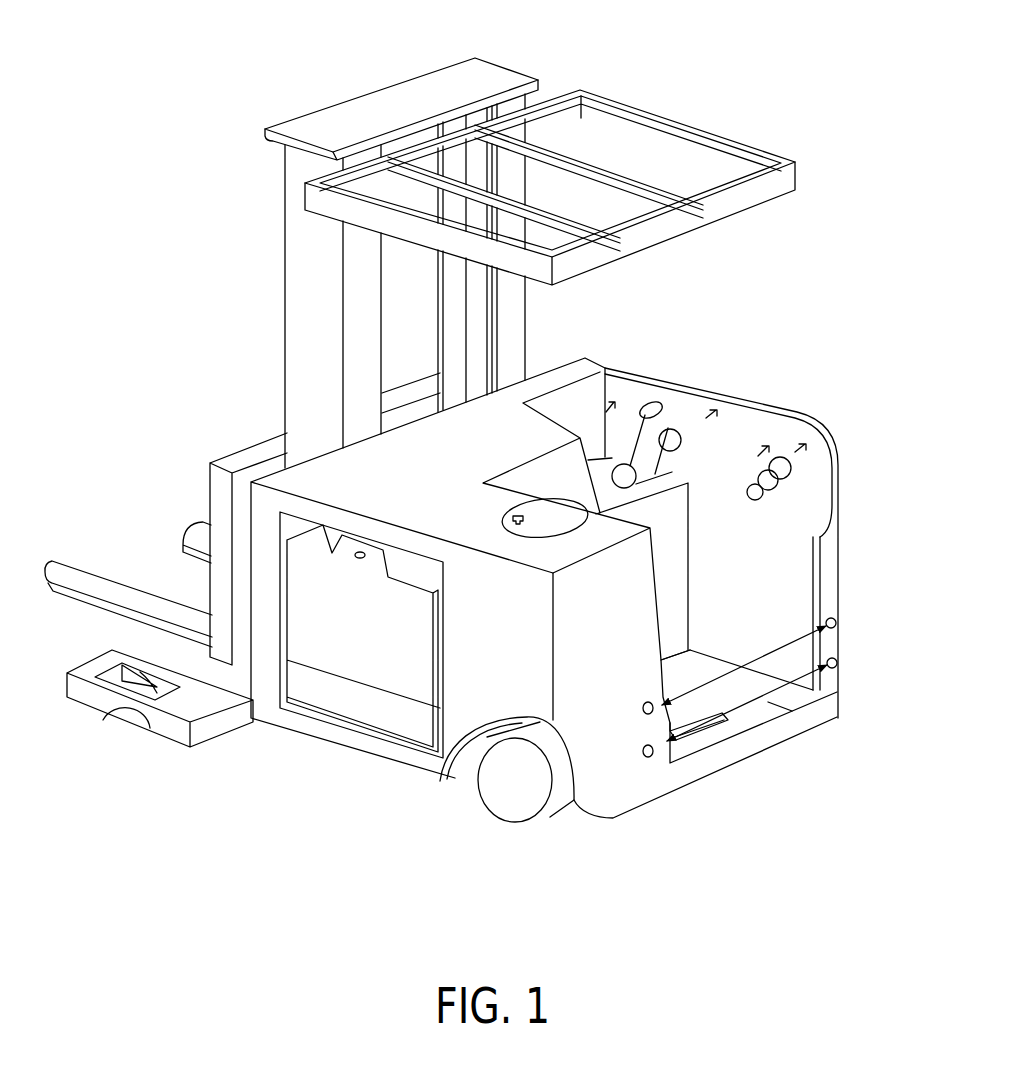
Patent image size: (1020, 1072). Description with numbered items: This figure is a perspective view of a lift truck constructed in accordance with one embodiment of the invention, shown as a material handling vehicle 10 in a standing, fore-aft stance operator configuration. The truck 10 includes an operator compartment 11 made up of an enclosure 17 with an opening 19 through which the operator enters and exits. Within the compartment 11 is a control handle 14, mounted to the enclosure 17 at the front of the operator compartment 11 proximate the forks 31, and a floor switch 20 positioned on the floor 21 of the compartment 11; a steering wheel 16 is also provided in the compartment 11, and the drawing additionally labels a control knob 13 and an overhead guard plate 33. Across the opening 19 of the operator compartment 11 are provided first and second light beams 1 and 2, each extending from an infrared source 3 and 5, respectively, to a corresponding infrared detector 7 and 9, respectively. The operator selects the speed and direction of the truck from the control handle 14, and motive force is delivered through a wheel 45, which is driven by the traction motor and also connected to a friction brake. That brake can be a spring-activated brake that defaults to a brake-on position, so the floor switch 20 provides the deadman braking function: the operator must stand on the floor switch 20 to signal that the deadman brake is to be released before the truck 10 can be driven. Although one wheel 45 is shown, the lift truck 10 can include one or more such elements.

The first light beam 1 is at (767, 652).
The second light beam 2 is at (747, 730).
The infrared source 3 is at (645, 701).
The infrared source 5 is at (650, 758).
The infrared detector 7 is at (836, 621).
The infrared detector 9 is at (837, 661).
The material handling vehicle 10 is at (722, 93).
The operator compartment 11 is at (842, 440).
The control knob 13 is at (774, 500).
The control handle 14 is at (677, 405).
The steering wheel 16 is at (520, 527).
The enclosure 17 is at (838, 590).
The opening 19 is at (768, 613).
The floor switch 20 is at (713, 742).
The floor 21 is at (790, 712).
The forks 31 is at (77, 599).
The overhead guard plate 33 is at (508, 58).
The wheel 45 is at (484, 803).